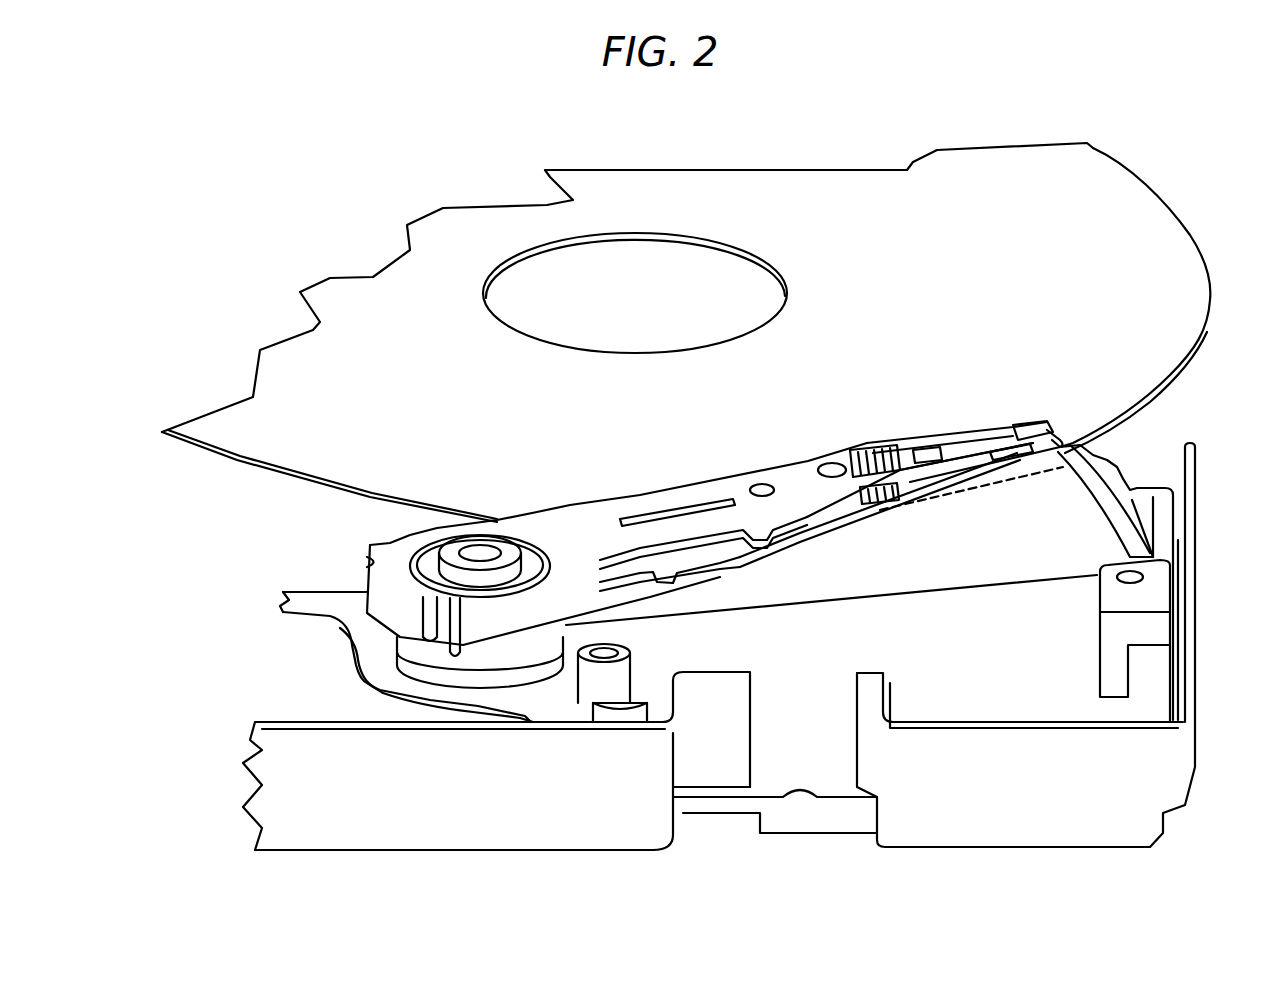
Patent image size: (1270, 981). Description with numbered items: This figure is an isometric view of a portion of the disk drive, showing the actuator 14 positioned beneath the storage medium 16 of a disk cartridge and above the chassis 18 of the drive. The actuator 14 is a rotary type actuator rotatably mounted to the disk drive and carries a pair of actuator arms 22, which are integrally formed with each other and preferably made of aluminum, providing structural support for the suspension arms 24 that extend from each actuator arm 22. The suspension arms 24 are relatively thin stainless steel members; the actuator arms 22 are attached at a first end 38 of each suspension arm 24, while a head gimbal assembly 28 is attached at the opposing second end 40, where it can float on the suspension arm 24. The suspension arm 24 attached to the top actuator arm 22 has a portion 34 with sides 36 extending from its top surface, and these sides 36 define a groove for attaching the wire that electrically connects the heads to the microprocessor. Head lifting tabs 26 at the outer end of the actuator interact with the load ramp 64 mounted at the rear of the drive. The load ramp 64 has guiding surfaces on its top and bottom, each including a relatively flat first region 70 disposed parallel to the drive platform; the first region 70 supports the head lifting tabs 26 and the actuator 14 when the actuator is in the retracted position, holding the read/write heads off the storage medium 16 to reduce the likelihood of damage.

The actuator 14 is at (533, 500).
The storage medium 16 is at (1023, 196).
The chassis 18 is at (1200, 767).
The actuator arms 22 is at (585, 505).
The suspension arms 24 is at (897, 452).
The head lifting tabs 26 is at (1050, 430).
The head gimbal assembly 28 is at (1017, 432).
The portion 34 is at (913, 452).
The sides 36 is at (873, 445).
The first end 38 is at (813, 482).
The second end 40 is at (1033, 422).
The load ramp 64 is at (1113, 452).
The first region 70 is at (1122, 488).